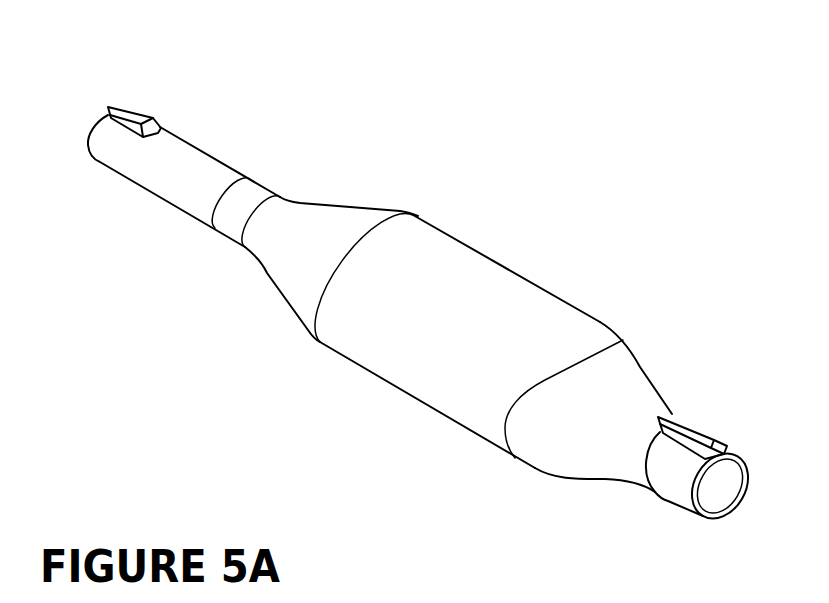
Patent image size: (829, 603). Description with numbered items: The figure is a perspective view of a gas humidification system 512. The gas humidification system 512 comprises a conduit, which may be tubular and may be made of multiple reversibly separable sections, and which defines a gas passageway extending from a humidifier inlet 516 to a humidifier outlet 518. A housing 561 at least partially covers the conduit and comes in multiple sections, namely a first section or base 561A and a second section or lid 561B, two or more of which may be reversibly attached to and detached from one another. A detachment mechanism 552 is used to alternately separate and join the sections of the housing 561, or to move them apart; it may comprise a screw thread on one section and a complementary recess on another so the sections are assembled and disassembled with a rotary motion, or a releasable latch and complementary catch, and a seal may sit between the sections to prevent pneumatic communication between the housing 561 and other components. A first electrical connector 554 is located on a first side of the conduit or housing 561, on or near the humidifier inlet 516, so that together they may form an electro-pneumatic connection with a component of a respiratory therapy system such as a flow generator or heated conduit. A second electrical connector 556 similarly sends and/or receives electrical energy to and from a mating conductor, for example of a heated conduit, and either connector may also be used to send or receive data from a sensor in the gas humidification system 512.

The gas humidification system 512 is at (313, 410).
The humidifier inlet 516 is at (108, 168).
The humidifier outlet 518 is at (683, 500).
The detachment mechanism 552 is at (502, 432).
The first electrical connector 554 is at (130, 107).
The second electrical connector 556 is at (710, 436).
The housing 561 is at (667, 283).
The first section or base 561A is at (565, 298).
The second section or lid 561B is at (640, 382).